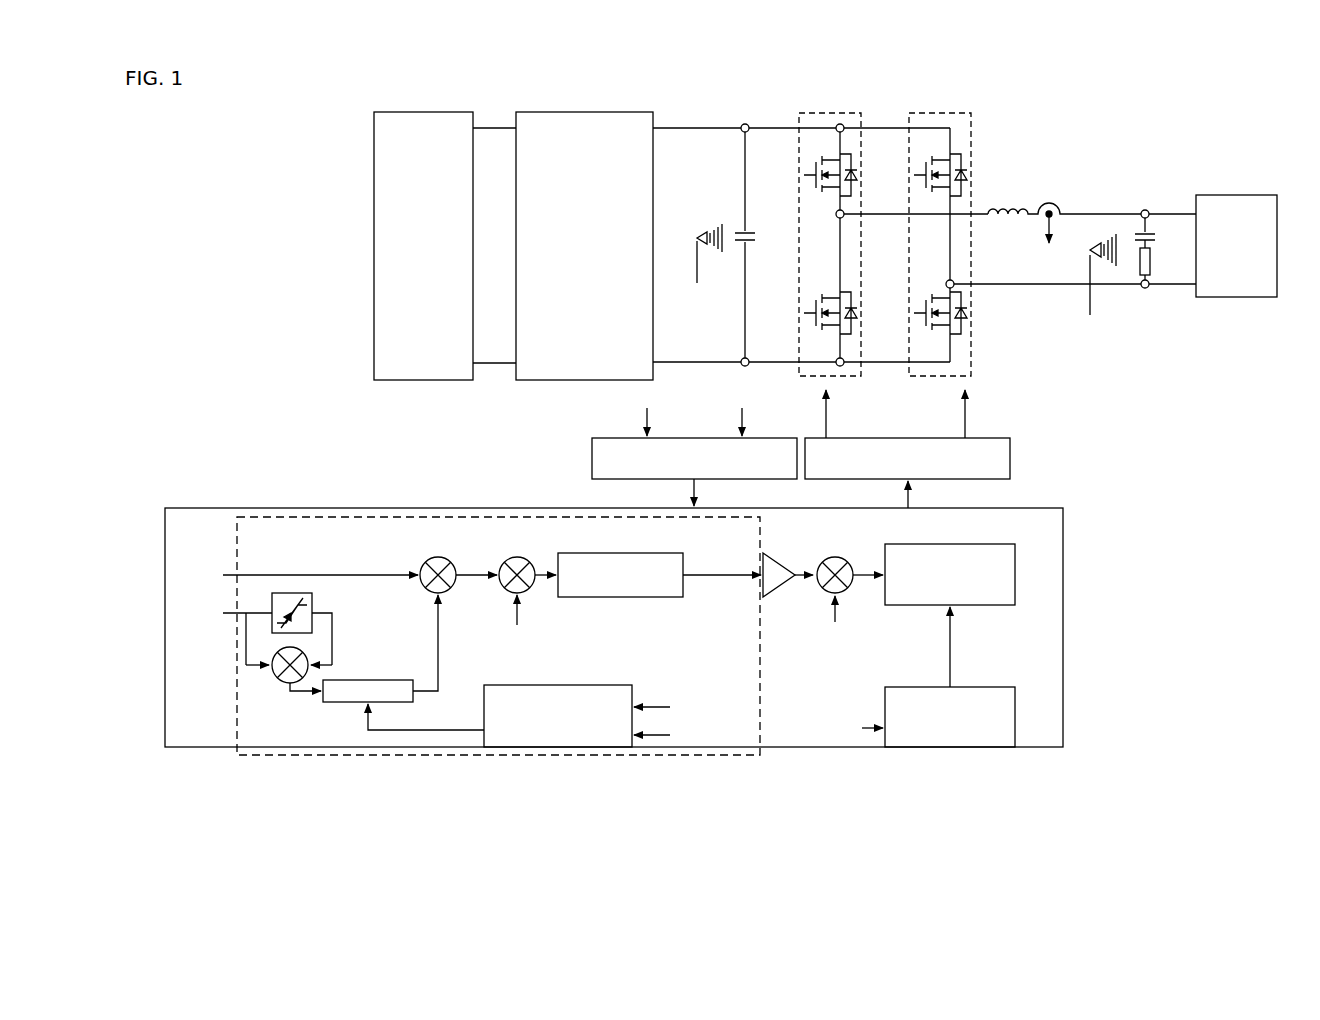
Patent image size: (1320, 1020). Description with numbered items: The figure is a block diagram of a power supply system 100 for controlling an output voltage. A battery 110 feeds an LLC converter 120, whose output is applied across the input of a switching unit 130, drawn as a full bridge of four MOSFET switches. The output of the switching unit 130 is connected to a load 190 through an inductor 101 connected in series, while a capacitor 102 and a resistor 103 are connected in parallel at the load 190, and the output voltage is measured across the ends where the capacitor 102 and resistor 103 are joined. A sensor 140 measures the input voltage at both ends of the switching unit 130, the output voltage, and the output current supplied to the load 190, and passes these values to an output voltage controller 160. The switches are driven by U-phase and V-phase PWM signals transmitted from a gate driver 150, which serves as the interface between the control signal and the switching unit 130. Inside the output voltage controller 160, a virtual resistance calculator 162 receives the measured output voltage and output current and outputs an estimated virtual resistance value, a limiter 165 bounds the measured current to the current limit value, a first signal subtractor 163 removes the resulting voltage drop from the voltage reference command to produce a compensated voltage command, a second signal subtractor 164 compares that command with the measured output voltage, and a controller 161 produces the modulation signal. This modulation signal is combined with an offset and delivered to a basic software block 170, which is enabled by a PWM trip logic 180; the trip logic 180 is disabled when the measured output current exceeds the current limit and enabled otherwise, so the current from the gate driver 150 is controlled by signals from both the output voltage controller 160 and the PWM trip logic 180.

The power supply system 100 is at (337, 119).
The battery 110 is at (416, 112).
The LLC converter 120 is at (606, 112).
The switching unit 130 is at (822, 113).
The inductor 101 is at (1026, 204).
The capacitor 102 is at (1138, 230).
The resistor 103 is at (1152, 272).
The load 190 is at (1233, 195).
The sensor 140 is at (592, 460).
The gate driver 150 is at (1010, 460).
The output voltage controller 160 is at (703, 756).
The controller 161 is at (630, 598).
The virtual resistance calculator 162 is at (614, 748).
The first signal subtractor 163 is at (428, 557).
The second signal subtractor 164 is at (512, 556).
The limiter 165 is at (313, 627).
The basic software (BSW) 170 is at (1015, 573).
The PWM trip logic 180 is at (1015, 713).